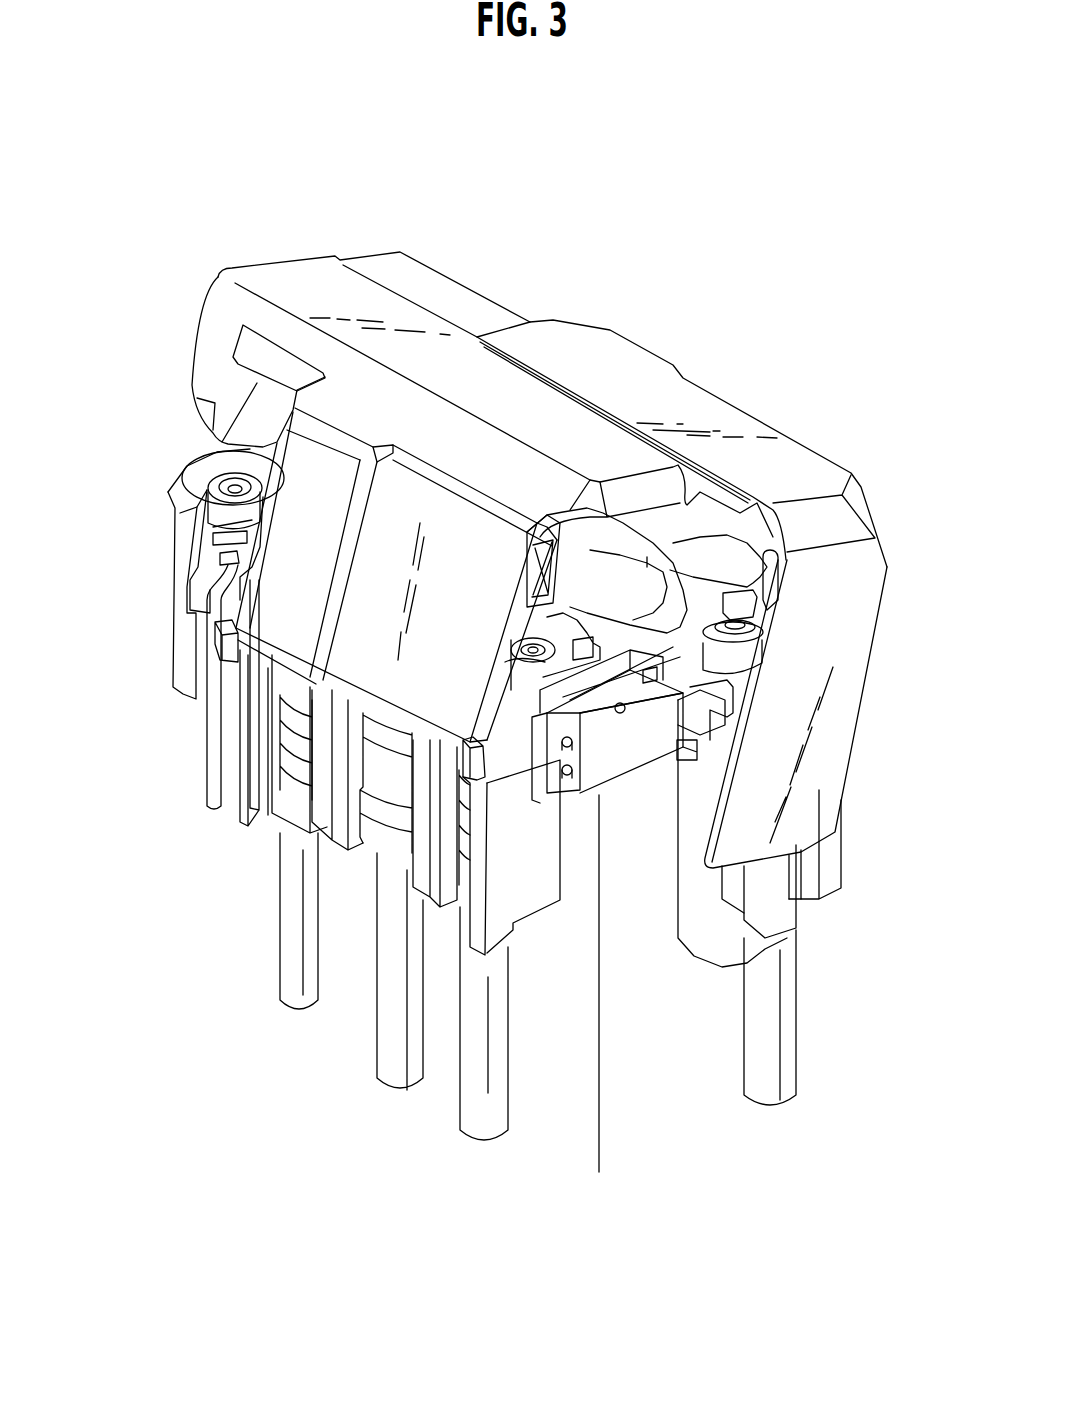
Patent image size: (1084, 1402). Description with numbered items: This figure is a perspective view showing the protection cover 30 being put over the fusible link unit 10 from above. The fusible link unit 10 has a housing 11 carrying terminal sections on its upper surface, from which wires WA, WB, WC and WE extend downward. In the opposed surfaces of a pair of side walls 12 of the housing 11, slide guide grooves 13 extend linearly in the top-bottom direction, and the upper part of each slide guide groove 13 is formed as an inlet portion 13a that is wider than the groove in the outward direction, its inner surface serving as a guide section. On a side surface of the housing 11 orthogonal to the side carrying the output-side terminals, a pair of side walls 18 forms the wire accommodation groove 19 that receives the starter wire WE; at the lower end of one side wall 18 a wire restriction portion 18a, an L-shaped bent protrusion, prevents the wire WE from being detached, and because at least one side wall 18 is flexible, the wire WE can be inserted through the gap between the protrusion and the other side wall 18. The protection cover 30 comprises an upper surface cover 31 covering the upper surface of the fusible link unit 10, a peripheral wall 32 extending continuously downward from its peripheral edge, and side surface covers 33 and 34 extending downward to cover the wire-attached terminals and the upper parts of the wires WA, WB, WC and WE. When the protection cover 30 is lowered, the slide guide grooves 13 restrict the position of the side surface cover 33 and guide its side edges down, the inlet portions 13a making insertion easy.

The fusible link unit 10 is at (163, 695).
The housing 11 is at (182, 638).
The side walls 12 is at (230, 812).
The slide guide groove 13 is at (250, 830).
The inlet portion 13a is at (237, 652).
The side walls 18 is at (761, 868).
The wire restriction portion 18a is at (762, 940).
The wire accommodation groove 19 is at (801, 902).
The protection cover 30 is at (436, 232).
The upper surface cover 31 is at (480, 308).
The peripheral wall 32 is at (215, 322).
The side surface cover 33 is at (365, 705).
The side surface cover 34 is at (862, 650).
The wire WA is at (292, 1003).
The wire WB is at (380, 1080).
The wire WC is at (477, 1125).
The wire WE is at (770, 1095).